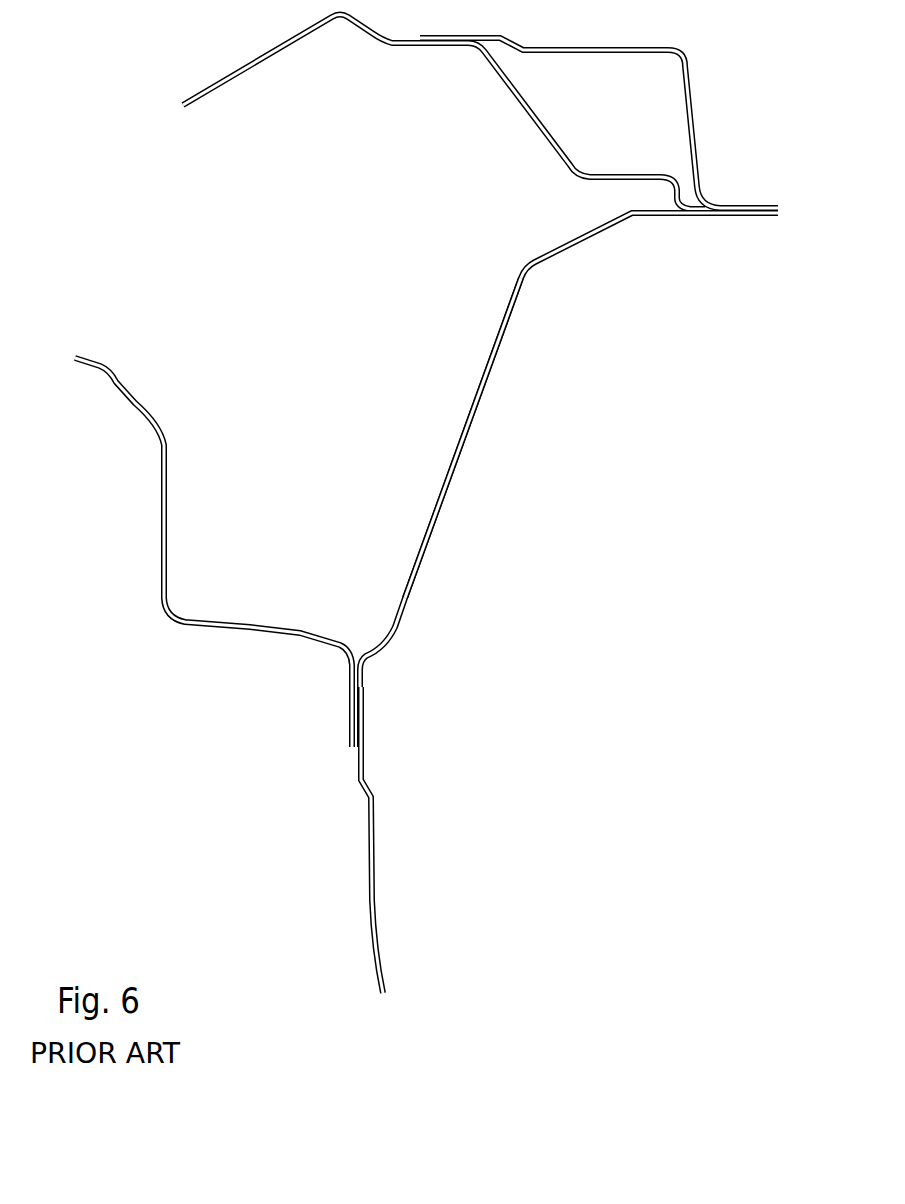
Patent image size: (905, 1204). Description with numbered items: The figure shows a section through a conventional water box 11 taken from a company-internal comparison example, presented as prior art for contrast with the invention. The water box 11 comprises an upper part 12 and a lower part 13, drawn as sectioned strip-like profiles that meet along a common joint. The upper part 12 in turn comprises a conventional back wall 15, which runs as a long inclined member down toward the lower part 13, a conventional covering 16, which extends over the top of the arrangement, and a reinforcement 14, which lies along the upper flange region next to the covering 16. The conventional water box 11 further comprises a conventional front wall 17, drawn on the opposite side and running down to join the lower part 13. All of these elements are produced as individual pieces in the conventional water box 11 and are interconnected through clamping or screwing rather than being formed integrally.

The water box 11 is at (528, 540).
The upper part 12 is at (587, 248).
The lower part 13 is at (373, 897).
The reinforcement 14 is at (692, 108).
The back wall 15 is at (468, 430).
The covering 16 is at (523, 117).
The front wall 17 is at (170, 500).